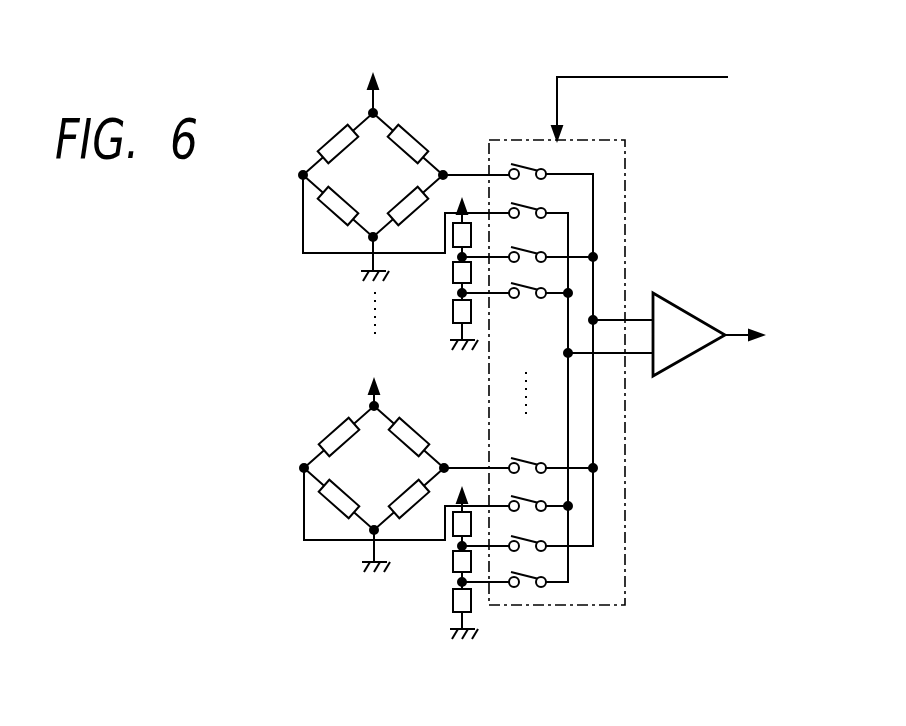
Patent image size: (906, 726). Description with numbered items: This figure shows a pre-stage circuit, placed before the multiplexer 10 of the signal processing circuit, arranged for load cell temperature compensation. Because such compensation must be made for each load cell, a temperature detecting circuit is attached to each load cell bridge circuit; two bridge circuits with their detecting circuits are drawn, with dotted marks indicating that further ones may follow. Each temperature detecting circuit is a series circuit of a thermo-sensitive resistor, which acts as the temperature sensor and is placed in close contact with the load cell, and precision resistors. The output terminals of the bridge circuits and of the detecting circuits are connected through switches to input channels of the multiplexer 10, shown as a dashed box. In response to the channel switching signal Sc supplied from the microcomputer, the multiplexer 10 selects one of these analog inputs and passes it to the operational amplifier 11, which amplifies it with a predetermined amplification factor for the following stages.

The multiplexer 10 is at (626, 158).
The operational amplifier 11 is at (689, 306).
The channel switching signal Sc is at (670, 77).